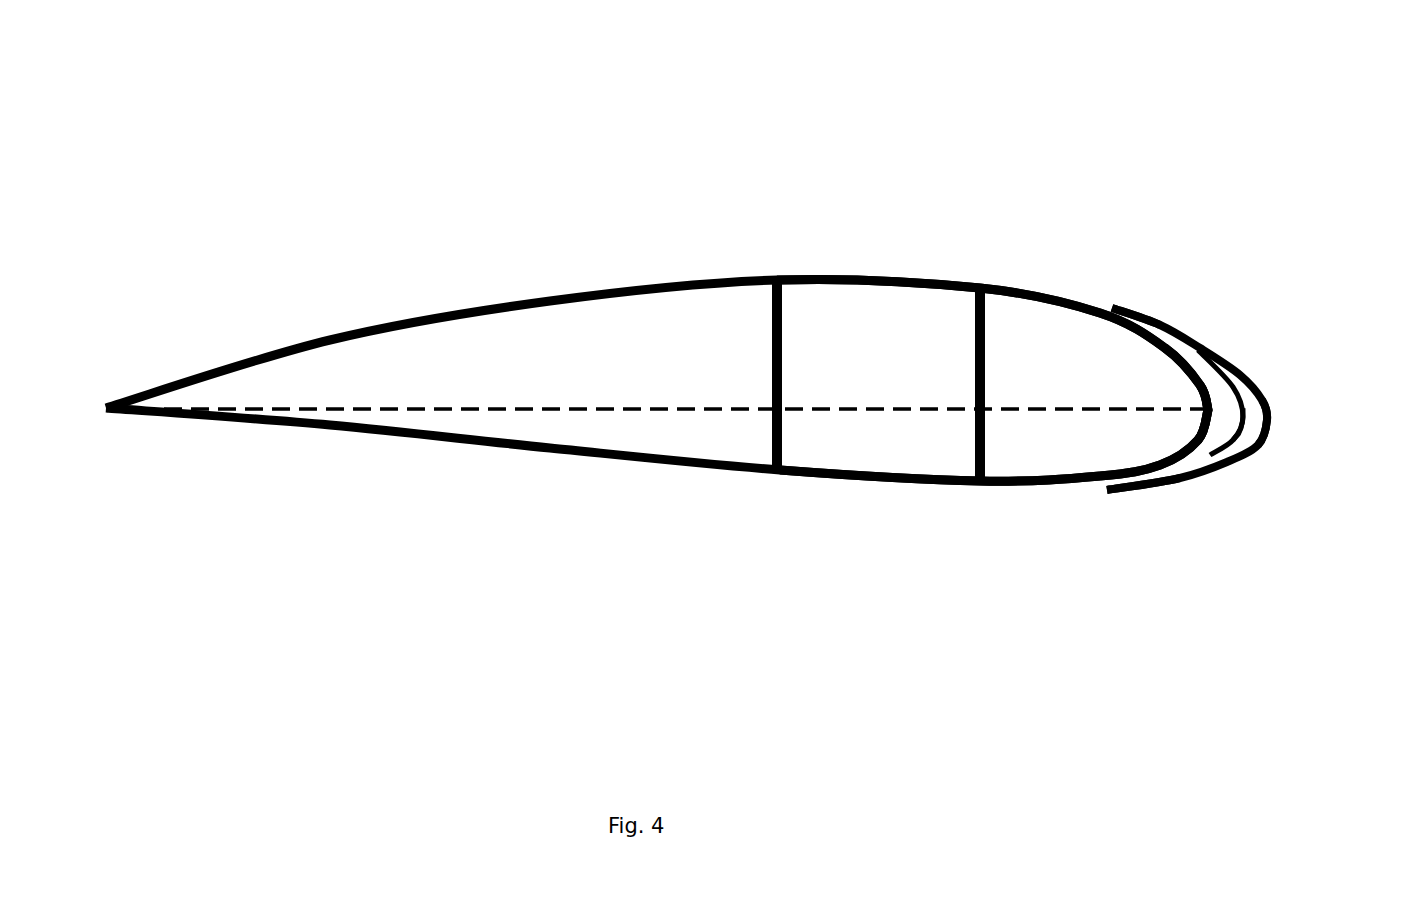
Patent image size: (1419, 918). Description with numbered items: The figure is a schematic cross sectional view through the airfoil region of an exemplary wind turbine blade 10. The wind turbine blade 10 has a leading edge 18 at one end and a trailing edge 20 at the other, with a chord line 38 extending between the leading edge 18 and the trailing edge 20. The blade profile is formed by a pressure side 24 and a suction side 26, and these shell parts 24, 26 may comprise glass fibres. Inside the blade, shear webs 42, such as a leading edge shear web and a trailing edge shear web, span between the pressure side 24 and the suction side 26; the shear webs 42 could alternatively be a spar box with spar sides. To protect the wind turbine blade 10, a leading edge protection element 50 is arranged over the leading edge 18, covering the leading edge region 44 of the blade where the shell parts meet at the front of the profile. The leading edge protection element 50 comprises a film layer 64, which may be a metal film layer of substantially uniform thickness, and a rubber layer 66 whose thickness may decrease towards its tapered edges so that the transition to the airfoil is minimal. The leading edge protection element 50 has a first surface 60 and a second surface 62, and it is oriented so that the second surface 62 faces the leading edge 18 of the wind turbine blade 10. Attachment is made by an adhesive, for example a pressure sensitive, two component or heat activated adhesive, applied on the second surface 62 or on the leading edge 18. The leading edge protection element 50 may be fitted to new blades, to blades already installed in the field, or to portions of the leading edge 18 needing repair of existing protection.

The wind turbine blade 10 is at (520, 100).
The leading edge 18 is at (1205, 398).
The trailing edge 20 is at (108, 408).
The pressure side 24 is at (998, 488).
The suction side 26 is at (1023, 290).
The chord line 38 is at (652, 408).
The shear webs 42 is at (772, 432).
The leading edge region 44 is at (1105, 312).
The leading edge protection element 50 is at (1333, 483).
The first surface 60 is at (1272, 410).
The second surface 62 is at (1228, 434).
The film layer 64 is at (1260, 435).
The rubber layer 66 is at (1244, 435).